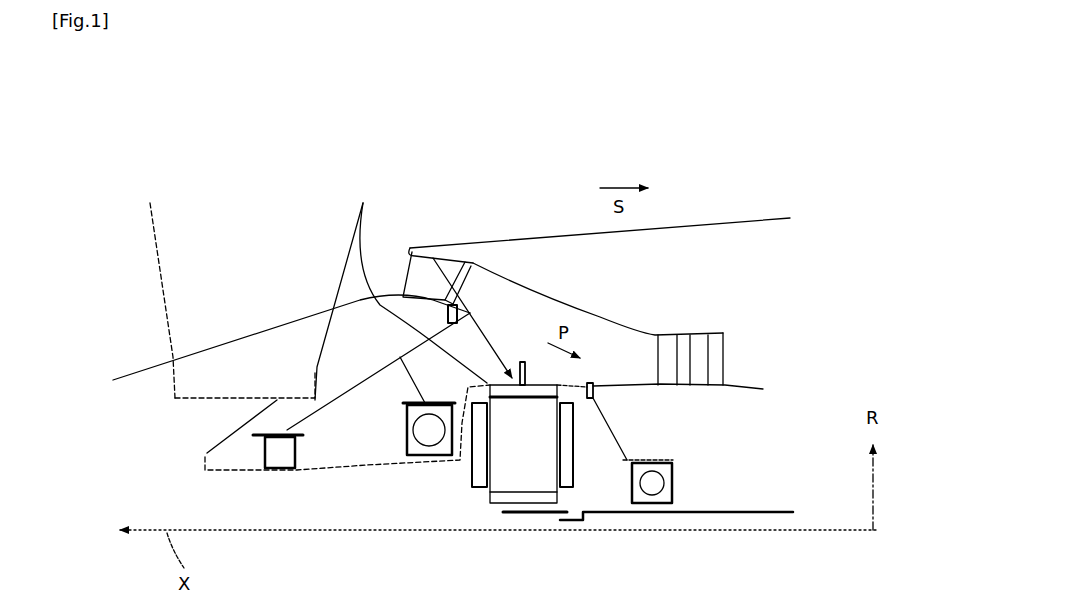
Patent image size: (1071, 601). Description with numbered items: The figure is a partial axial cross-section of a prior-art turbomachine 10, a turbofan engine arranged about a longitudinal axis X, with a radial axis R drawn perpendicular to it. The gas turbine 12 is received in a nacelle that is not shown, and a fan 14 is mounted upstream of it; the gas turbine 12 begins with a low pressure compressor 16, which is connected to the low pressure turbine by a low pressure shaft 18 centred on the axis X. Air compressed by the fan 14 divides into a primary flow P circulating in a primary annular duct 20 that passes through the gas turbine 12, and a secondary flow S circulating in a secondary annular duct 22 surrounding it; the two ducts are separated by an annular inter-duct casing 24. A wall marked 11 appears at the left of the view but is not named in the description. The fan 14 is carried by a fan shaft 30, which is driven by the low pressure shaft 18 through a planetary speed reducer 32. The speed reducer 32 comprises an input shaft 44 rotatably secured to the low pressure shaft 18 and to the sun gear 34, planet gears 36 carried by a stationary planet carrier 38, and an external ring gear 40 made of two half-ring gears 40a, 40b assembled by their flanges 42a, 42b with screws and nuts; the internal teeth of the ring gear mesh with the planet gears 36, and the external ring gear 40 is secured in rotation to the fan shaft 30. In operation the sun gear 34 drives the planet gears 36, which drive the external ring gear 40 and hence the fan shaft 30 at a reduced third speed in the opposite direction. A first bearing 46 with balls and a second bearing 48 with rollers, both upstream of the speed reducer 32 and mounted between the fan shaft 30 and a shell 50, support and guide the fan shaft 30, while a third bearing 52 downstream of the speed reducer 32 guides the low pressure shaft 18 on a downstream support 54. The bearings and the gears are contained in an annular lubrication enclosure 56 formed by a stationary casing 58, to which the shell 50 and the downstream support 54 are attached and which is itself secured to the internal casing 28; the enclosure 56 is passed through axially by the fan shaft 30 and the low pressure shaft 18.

The turbomachine 10 is at (136, 127).
The firewall 11 is at (170, 245).
The gas turbine 12 is at (692, 281).
The fan 14 is at (133, 321).
The low pressure compressor 16 is at (720, 333).
The low pressure shaft 18 is at (753, 522).
The primary annular duct 20 is at (617, 345).
The secondary annular duct 22 is at (729, 205).
The inter-duct casing 24 is at (567, 253).
The internal casing 28 is at (737, 392).
The fan shaft 30 is at (215, 473).
The speed reducer 32 is at (536, 519).
The sun gear 34 is at (500, 503).
The planet gears 36 is at (503, 472).
The planet carrier 38 is at (570, 467).
The external ring gear 40 is at (493, 377).
The half-ring gear 40a is at (353, 363).
The half-ring gear 40b is at (543, 373).
The flange 42a is at (446, 292).
The flange 42b is at (527, 363).
The input shaft 44 is at (527, 513).
The first bearing 46 is at (415, 484).
The second bearing 48 is at (292, 482).
The shell 50 is at (350, 383).
The third bearing 52 is at (658, 514).
The downstream support 54 is at (600, 440).
The lubrication enclosure 56 is at (365, 447).
The stationary casing 58 is at (590, 380).